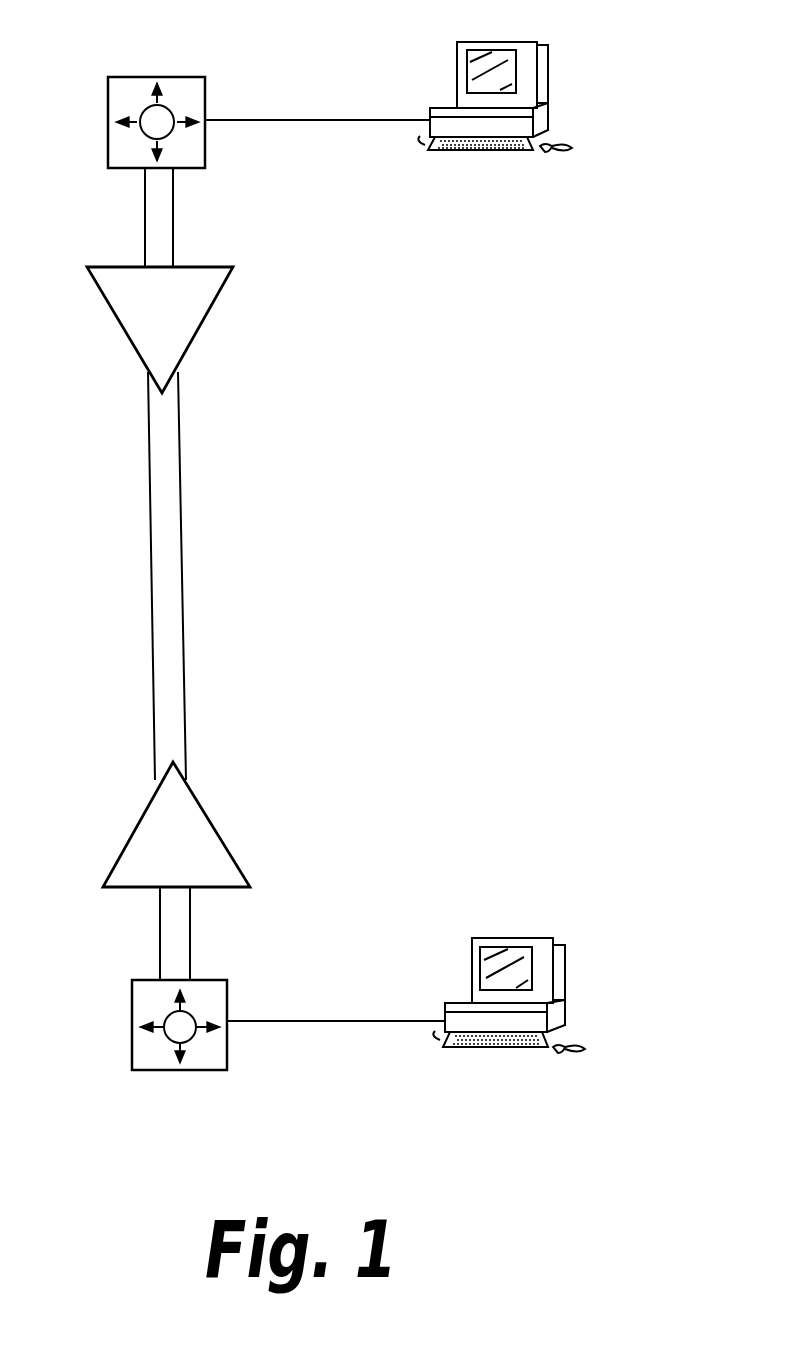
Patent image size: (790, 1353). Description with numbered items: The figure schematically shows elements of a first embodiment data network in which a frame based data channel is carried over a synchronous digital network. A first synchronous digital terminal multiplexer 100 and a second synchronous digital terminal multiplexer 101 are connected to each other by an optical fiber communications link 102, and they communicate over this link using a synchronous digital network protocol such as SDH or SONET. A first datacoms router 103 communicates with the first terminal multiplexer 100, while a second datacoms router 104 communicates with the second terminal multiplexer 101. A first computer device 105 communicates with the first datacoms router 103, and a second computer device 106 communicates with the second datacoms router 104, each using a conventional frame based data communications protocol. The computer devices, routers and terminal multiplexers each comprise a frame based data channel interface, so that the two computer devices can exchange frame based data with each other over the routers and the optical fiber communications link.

The first synchronous digital terminal multiplexer 100 is at (177, 338).
The second synchronous digital terminal multiplexer 101 is at (213, 852).
The optical fiber communications link 102 is at (183, 617).
The first datacoms router 103 is at (187, 82).
The second datacoms router 104 is at (168, 1070).
The first computer device 105 is at (541, 120).
The second computer device 106 is at (565, 1015).